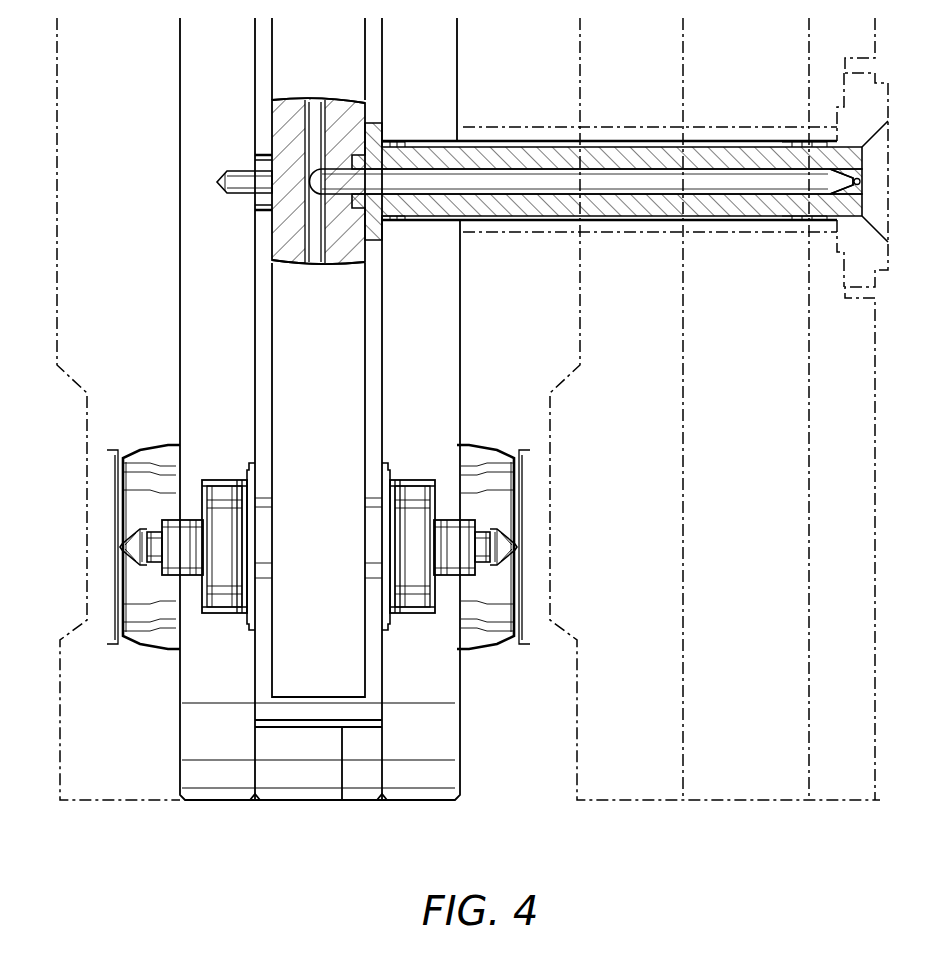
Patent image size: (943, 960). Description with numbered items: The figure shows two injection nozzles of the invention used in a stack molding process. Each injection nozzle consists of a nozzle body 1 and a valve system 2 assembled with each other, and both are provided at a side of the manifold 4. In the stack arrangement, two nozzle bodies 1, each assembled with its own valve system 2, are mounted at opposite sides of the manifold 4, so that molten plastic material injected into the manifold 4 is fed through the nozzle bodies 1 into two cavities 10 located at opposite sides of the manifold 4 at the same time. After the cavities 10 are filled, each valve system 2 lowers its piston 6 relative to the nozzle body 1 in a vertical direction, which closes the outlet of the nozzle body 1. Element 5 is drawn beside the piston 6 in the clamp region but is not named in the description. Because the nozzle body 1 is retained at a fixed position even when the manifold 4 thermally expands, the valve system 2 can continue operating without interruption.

The nozzle body 1 is at (136, 534).
The valve system 2 is at (231, 627).
The manifold 4 is at (330, 407).
The outer clamp sleeve 5 is at (233, 480).
The piston 6 is at (209, 480).
The cavity 10 is at (109, 593).